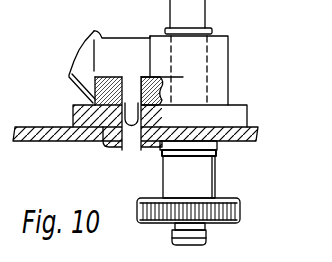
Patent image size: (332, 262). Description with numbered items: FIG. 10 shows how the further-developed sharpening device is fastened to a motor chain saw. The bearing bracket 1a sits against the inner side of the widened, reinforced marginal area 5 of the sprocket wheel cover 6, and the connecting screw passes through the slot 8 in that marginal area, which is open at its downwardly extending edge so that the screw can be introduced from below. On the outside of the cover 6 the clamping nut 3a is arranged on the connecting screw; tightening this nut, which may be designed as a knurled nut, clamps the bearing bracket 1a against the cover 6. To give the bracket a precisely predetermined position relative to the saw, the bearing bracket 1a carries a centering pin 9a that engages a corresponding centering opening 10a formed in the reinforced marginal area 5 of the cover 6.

The bearing bracket 1a is at (221, 72).
The clamping nut 3a is at (239, 206).
The widened marginal area 5 is at (238, 115).
The sprocket wheel cover 6 is at (26, 141).
The slot 8 is at (25, 0).
The centering pin 9a is at (132, 83).
The centering opening 10a is at (133, 148).